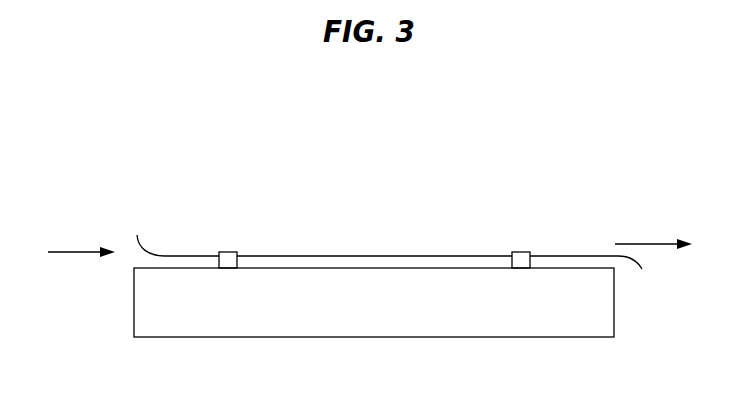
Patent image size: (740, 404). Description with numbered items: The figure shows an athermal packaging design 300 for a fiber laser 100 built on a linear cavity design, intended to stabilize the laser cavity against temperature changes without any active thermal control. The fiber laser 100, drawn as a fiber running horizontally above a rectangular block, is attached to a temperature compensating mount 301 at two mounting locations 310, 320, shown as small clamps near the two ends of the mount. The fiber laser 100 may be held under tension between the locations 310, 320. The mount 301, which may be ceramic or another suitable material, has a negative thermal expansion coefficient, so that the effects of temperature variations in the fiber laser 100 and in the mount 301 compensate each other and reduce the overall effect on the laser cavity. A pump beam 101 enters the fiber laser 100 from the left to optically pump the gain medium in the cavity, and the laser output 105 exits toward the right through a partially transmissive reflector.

The athermal packaged fiber laser assembly 300 is at (291, 116).
The temperature compensating mount 301 is at (615, 302).
The fiber laser 100 is at (381, 256).
The mounting location 310 is at (230, 252).
The mounting location 320 is at (520, 252).
The pump beam 101 is at (83, 251).
The laser output 105 is at (652, 243).